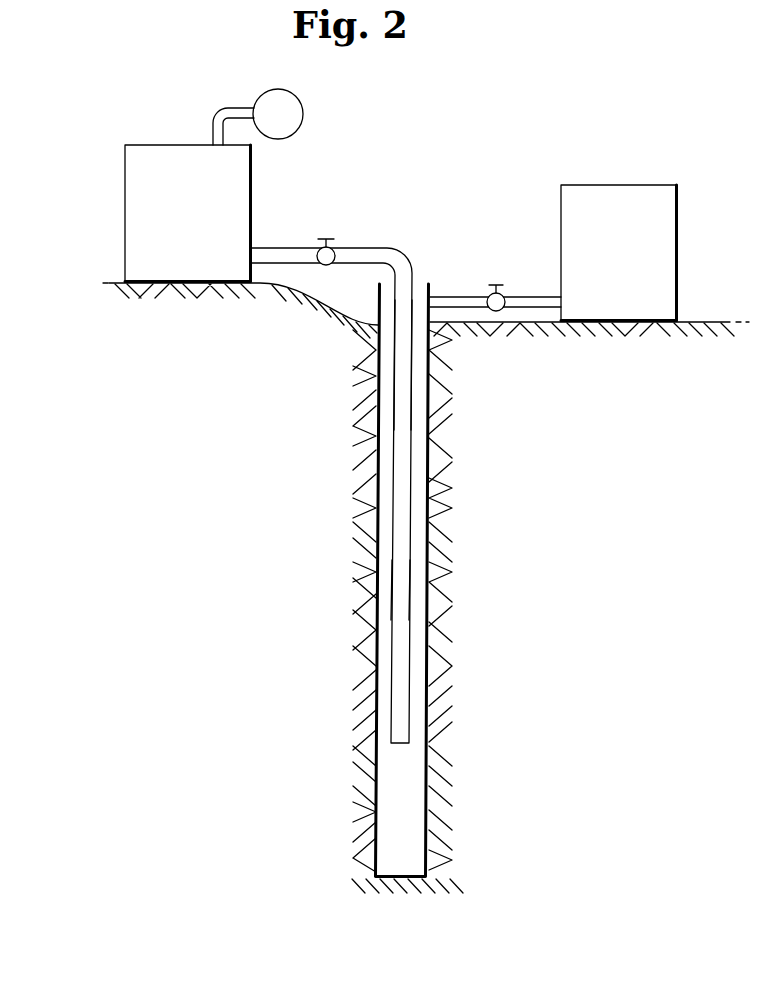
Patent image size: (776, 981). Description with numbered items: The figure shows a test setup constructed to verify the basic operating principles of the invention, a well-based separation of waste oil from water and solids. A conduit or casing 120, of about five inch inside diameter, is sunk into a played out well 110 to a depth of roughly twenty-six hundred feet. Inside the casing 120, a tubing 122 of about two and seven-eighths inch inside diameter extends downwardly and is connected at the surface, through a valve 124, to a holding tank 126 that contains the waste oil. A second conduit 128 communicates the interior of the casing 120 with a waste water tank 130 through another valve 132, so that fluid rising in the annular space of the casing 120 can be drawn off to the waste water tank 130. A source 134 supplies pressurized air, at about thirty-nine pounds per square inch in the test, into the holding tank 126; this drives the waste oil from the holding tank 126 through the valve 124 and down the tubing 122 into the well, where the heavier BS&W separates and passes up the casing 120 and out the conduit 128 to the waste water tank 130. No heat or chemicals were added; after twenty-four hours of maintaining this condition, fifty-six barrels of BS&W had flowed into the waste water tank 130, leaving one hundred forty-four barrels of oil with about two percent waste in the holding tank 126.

The well 110 is at (416, 619).
The casing 120 is at (427, 506).
The tubing 122 is at (411, 429).
The valve 124 is at (329, 238).
The holding tank 126 is at (251, 202).
The conduit 128 is at (361, 492).
The waste water tank 130 is at (560, 203).
The valve 132 is at (500, 285).
The source 134 is at (303, 119).